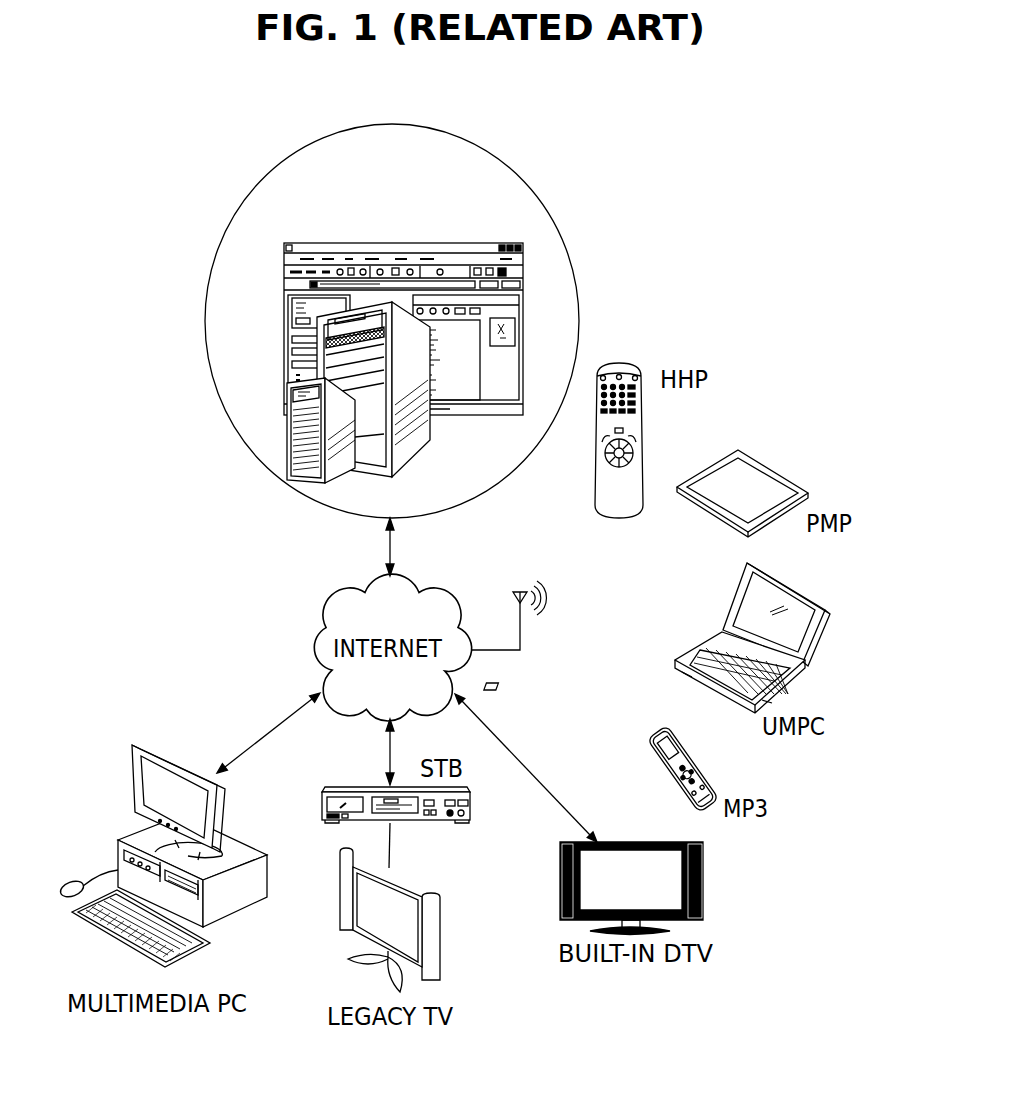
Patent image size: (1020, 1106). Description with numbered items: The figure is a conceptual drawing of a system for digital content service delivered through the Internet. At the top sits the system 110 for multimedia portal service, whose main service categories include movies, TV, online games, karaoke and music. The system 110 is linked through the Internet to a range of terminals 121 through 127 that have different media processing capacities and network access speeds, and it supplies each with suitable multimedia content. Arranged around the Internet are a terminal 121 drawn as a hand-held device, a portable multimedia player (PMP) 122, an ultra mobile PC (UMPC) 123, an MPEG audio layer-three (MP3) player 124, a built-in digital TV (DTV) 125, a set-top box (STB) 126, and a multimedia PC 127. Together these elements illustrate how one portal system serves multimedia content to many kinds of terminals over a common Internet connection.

The system for multimedia portal service 110 is at (537, 240).
The terminal 121 is at (620, 357).
The portable multimedia player (PMP) 122 is at (793, 475).
The ultra mobile PC (UMPC) 123 is at (817, 652).
The MPEG audio layer-3 (MP3) player 124 is at (718, 783).
The built-in digital TV (DTV) 125 is at (702, 907).
The set-top box (STB) 126 is at (453, 840).
The multimedia PC 127 is at (122, 830).